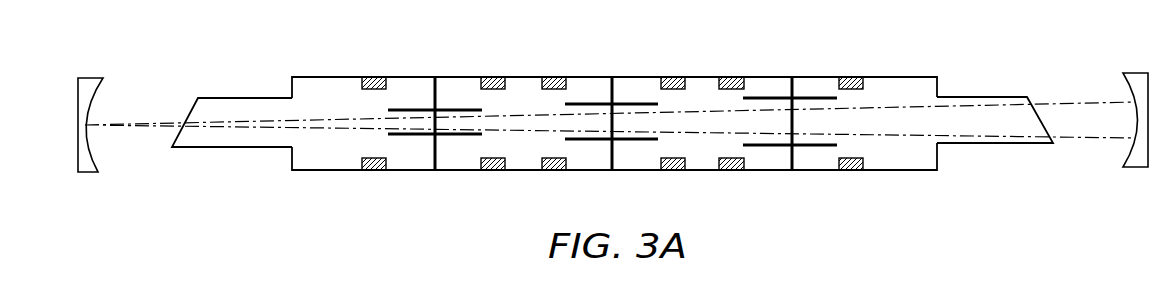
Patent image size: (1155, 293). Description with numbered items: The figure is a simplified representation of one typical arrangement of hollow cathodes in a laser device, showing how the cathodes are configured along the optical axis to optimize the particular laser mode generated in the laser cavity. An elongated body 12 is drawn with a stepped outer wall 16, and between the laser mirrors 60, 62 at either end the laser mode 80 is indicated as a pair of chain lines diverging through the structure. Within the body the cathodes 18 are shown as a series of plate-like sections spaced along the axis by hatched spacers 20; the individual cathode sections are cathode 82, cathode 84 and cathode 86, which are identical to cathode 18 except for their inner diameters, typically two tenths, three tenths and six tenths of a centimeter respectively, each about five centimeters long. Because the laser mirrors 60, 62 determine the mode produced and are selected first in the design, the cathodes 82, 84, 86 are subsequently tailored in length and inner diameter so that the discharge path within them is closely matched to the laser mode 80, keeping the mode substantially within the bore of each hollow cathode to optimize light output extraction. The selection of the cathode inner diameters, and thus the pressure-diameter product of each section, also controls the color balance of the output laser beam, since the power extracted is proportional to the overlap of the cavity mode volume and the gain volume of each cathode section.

The laser tube end section 12 is at (178, 136).
The housing wall 16 is at (527, 171).
The cathode 18 is at (455, 110).
The insulating spacer 20 is at (375, 77).
The rear mirror 60 is at (98, 160).
The front mirror 62 is at (1128, 155).
The laser mode 80 is at (975, 118).
The cathode 82 is at (462, 136).
The cathode 84 is at (628, 104).
The cathode 86 is at (802, 98).